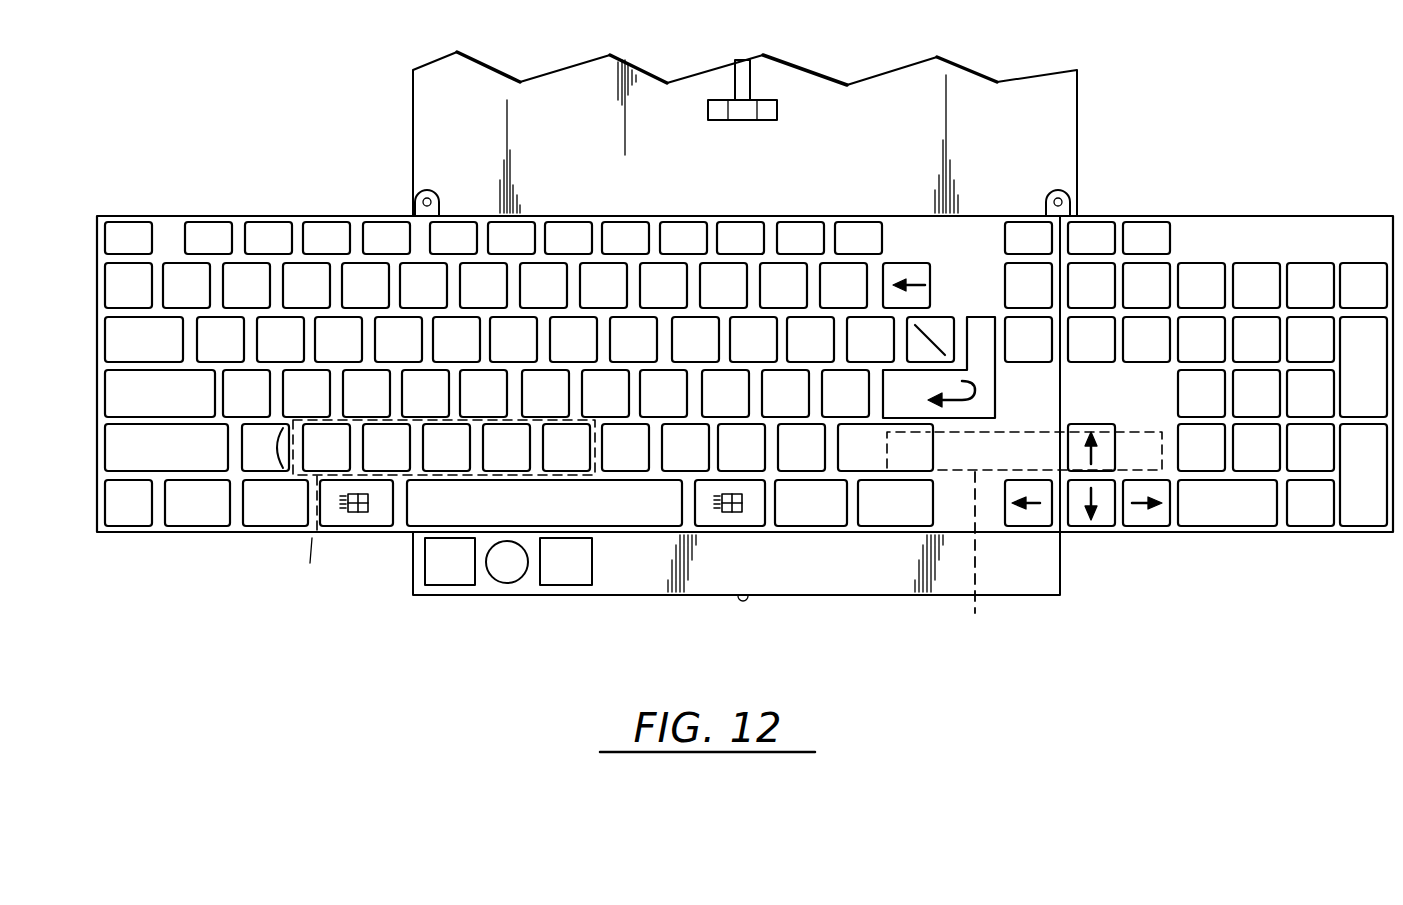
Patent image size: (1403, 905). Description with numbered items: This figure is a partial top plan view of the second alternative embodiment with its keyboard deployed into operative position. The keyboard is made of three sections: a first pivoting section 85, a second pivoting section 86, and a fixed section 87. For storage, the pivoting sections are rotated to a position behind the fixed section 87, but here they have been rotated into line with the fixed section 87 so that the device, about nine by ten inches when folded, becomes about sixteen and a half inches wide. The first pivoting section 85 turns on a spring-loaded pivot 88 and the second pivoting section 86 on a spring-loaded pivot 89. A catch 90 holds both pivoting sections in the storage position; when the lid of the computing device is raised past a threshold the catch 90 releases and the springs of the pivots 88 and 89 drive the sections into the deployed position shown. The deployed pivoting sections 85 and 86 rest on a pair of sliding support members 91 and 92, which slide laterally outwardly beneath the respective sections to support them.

The first pivoting section 85 is at (158, 333).
The second pivoting section 86 is at (1251, 237).
The fixed section 87 is at (657, 245).
The pivot 88 is at (417, 198).
The pivot 89 is at (1068, 198).
The catch 90 is at (762, 108).
The sliding support member 91 is at (306, 568).
The sliding support member 92 is at (976, 559).